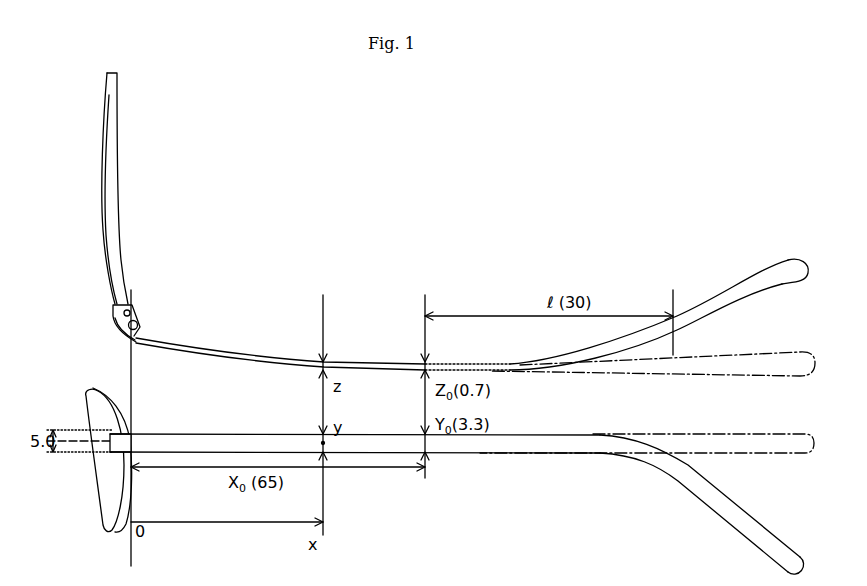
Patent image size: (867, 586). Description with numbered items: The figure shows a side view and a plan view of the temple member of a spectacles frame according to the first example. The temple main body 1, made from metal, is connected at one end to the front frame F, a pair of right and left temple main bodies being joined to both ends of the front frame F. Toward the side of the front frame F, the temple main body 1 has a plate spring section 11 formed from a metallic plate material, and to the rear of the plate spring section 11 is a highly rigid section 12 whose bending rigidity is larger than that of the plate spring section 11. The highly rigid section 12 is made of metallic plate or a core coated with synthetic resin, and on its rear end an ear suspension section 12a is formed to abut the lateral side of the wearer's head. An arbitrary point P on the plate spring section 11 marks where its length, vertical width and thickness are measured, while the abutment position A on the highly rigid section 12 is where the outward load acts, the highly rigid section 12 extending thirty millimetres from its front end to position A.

The temple main body 1 is at (488, 458).
The plate spring section 11 is at (195, 352).
The highly rigid section 12 is at (614, 350).
The ear suspension section 12a is at (747, 283).
The front frame F is at (110, 150).
The abutment position A is at (677, 316).
The arbitrary point P is at (323, 443).